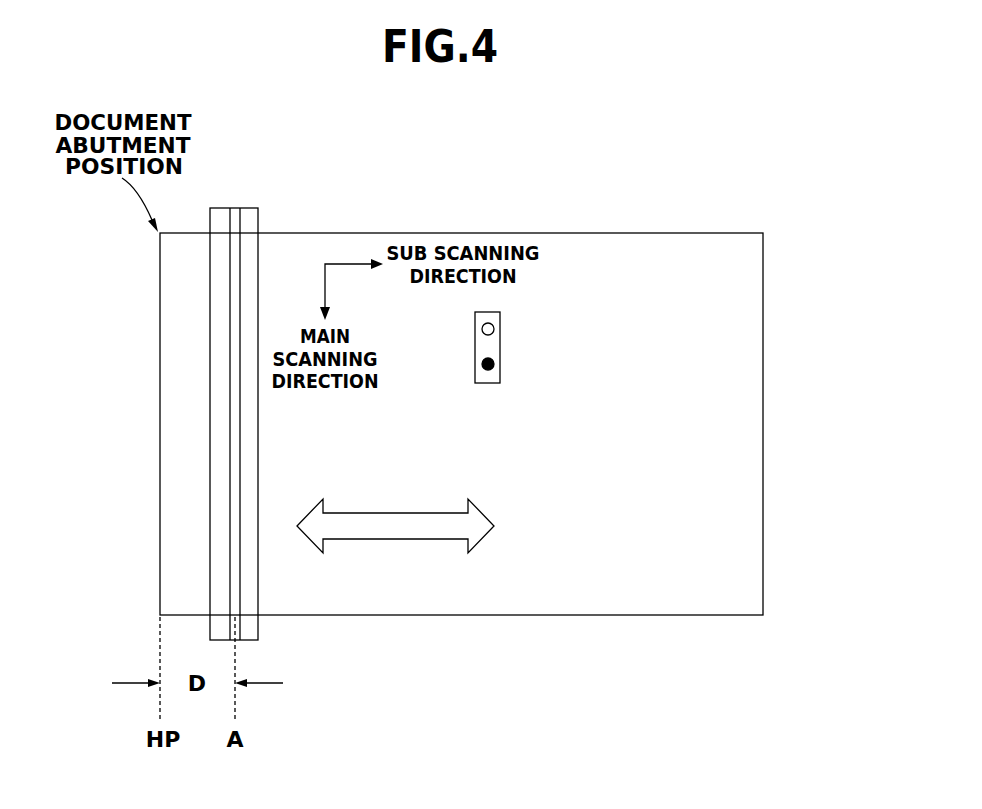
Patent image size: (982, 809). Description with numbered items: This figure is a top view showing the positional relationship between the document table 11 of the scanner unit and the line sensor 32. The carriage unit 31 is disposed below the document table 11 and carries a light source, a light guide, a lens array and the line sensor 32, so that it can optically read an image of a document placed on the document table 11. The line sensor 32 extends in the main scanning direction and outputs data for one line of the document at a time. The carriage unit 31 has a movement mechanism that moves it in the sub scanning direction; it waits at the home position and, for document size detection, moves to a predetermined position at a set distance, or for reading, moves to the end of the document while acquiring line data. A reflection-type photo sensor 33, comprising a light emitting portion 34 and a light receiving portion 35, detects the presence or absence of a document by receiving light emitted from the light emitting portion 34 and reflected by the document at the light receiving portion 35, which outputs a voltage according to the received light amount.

The document table 11 is at (745, 438).
The carriage unit 31 is at (235, 208).
The line sensor 32 is at (218, 420).
The reflection-type photo sensor 33 is at (500, 348).
The light emitting portion 34 is at (482, 330).
The light receiving portion 35 is at (482, 364).